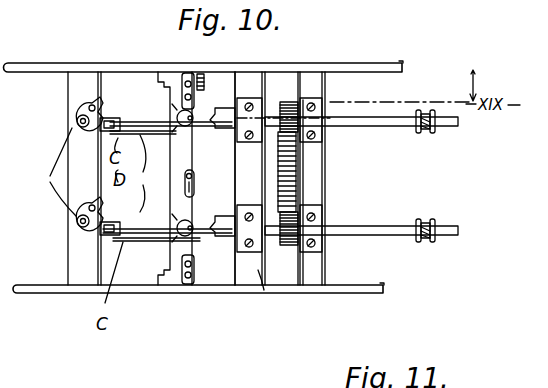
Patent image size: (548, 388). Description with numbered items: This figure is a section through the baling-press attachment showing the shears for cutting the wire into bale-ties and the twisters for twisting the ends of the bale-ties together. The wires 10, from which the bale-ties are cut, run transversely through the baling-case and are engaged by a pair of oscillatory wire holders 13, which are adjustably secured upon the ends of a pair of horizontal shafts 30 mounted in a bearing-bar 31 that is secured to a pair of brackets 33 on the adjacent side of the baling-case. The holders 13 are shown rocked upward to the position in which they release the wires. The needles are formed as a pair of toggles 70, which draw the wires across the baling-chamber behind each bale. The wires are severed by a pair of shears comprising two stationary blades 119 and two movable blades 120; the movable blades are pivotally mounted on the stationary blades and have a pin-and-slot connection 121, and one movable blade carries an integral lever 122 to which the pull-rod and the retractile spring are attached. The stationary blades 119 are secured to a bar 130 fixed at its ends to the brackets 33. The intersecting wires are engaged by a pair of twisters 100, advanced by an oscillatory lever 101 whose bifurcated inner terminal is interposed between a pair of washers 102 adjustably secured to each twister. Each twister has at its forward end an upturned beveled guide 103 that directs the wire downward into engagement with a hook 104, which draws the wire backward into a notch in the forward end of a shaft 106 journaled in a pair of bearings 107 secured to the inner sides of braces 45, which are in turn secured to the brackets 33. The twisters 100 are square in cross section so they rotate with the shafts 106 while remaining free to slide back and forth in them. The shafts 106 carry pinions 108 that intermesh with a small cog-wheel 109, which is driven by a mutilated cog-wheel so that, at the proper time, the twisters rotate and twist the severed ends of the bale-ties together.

The brackets 33 is at (44, 71).
The bearing-bar 31 is at (68, 97).
The oscillatory wire holders 13 is at (51, 172).
The horizontal shafts 30 is at (86, 207).
The toggles 70 is at (113, 117).
The stationary blades 119 is at (177, 136).
The movable blades 120 is at (178, 112).
The lever 122 is at (199, 74).
The bar 130 is at (179, 270).
The pin-and-slot connection 121 is at (195, 179).
The upturned beveled guide 103 is at (216, 110).
The hook 104 is at (226, 178).
The wires 10 is at (152, 173).
The bearings 107 is at (253, 100).
The shaft 106 is at (270, 112).
The pinions 108 is at (291, 104).
The small cog-wheel 109 is at (296, 176).
The twisters 100 is at (456, 228).
The oscillatory lever 101 is at (426, 218).
The washers 102 is at (418, 218).
The braces 45 is at (306, 274).